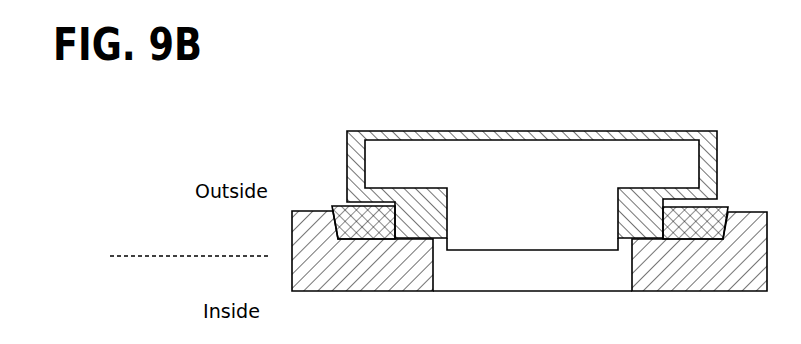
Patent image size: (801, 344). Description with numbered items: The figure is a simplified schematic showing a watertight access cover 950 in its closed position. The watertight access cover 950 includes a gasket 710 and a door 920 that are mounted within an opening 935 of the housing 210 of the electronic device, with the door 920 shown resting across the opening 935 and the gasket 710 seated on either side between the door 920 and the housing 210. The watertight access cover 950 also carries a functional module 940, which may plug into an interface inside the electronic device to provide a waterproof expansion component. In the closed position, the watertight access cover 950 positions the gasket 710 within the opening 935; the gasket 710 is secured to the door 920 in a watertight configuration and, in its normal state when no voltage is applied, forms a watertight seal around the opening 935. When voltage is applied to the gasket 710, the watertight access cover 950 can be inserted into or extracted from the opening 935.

The housing 210 is at (319, 217).
The gasket 710 is at (348, 241).
The door 920 is at (429, 130).
The opening 935 is at (533, 297).
The functional module 940 is at (548, 206).
The watertight access cover 950 is at (555, 153).